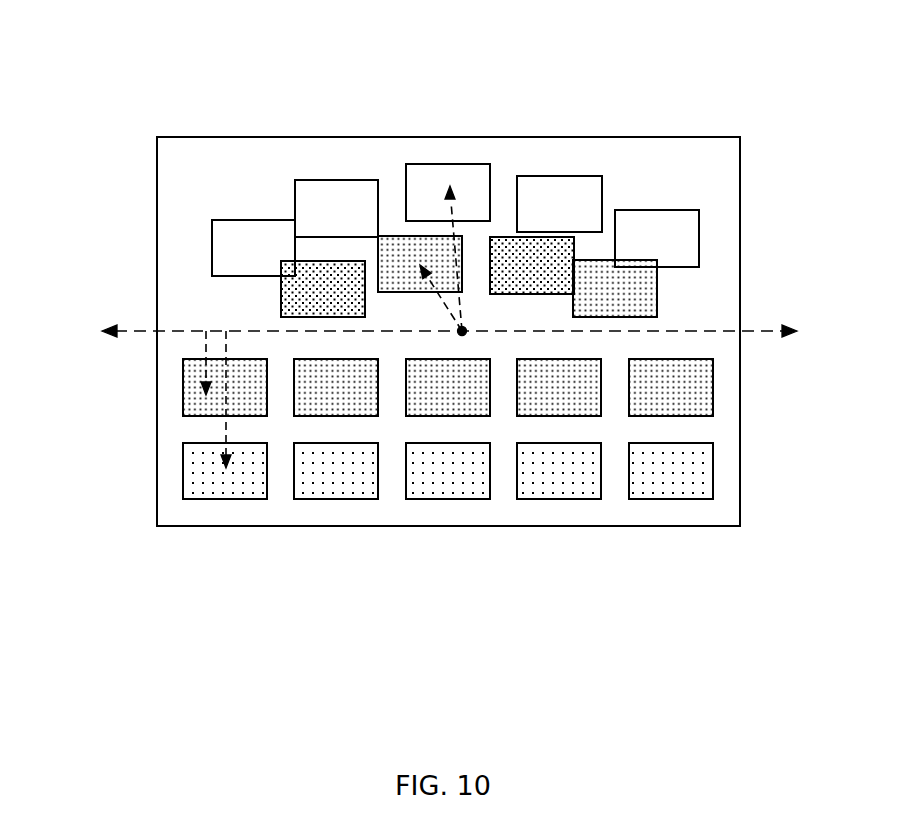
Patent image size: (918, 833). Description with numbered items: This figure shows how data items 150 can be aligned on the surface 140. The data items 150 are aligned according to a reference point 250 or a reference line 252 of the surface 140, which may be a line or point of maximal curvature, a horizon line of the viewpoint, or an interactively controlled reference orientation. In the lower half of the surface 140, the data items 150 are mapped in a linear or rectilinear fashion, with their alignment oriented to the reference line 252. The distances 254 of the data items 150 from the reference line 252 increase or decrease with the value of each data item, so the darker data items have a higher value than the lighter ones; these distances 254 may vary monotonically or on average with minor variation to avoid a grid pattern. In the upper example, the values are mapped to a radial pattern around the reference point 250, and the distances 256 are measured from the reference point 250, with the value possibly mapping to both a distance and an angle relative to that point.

The surface 140 is at (460, 31).
The data items 150 is at (293, 63).
The reference point 250 is at (518, 610).
The reference line 252 is at (617, 610).
The distances 254 is at (87, 413).
The distances 256 is at (604, 56).